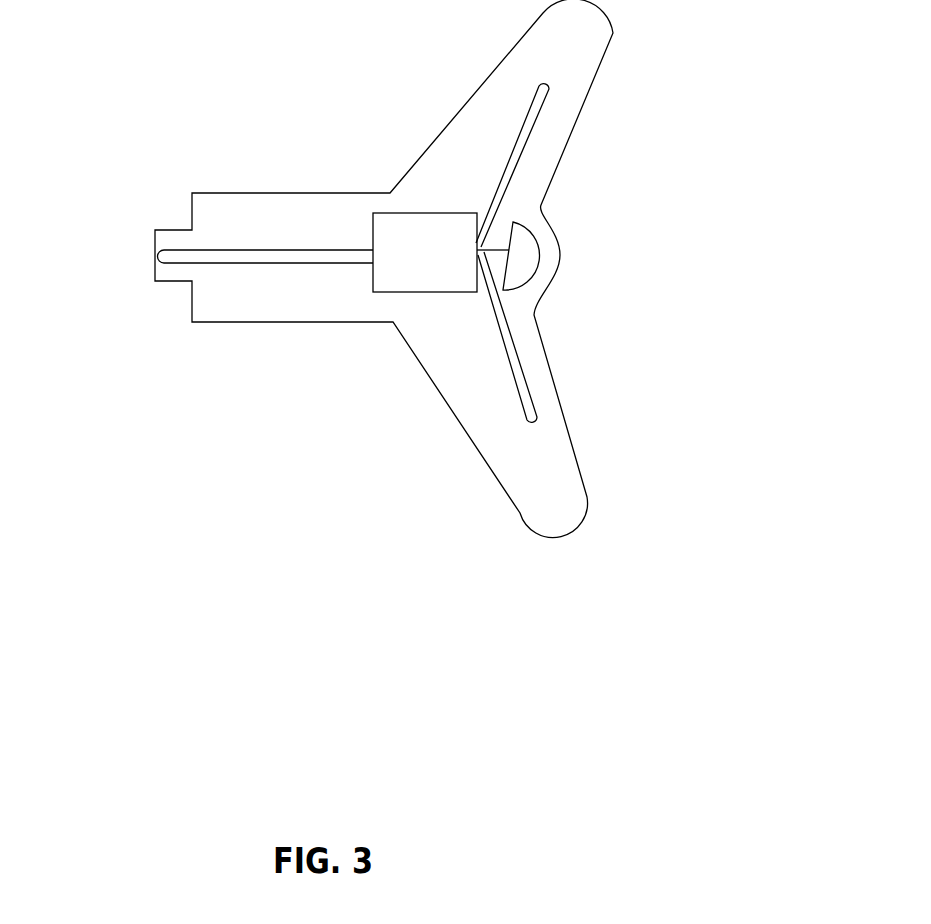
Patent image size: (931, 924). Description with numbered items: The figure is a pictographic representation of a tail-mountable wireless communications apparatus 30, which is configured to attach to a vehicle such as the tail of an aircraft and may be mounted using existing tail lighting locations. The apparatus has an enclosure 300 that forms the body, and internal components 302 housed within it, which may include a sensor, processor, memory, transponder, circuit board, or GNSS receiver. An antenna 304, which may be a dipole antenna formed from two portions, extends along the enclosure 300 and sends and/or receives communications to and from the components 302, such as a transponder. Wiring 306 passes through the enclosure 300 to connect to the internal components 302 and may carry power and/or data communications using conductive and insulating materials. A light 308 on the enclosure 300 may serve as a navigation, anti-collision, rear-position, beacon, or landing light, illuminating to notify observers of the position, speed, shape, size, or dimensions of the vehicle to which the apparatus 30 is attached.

The tail-mountable wireless communications apparatus 30 is at (578, 673).
The enclosure 300 is at (545, 152).
The components 302 is at (418, 246).
The antenna 304 is at (525, 408).
The wiring 306 is at (192, 257).
The light 308 is at (523, 260).